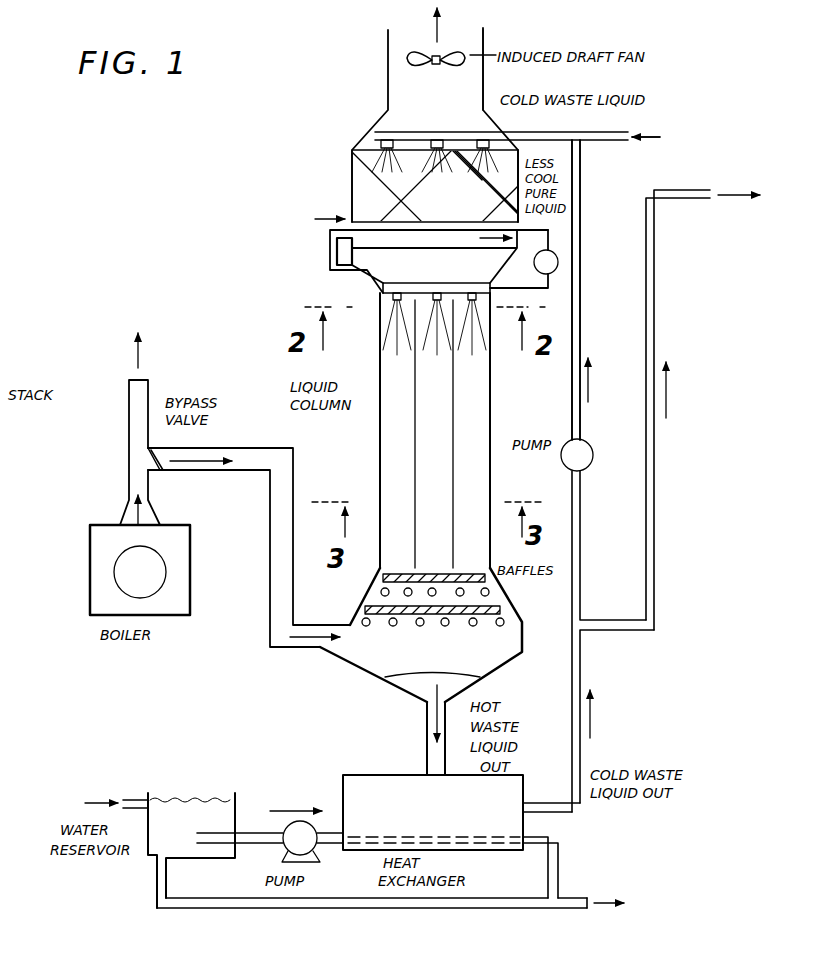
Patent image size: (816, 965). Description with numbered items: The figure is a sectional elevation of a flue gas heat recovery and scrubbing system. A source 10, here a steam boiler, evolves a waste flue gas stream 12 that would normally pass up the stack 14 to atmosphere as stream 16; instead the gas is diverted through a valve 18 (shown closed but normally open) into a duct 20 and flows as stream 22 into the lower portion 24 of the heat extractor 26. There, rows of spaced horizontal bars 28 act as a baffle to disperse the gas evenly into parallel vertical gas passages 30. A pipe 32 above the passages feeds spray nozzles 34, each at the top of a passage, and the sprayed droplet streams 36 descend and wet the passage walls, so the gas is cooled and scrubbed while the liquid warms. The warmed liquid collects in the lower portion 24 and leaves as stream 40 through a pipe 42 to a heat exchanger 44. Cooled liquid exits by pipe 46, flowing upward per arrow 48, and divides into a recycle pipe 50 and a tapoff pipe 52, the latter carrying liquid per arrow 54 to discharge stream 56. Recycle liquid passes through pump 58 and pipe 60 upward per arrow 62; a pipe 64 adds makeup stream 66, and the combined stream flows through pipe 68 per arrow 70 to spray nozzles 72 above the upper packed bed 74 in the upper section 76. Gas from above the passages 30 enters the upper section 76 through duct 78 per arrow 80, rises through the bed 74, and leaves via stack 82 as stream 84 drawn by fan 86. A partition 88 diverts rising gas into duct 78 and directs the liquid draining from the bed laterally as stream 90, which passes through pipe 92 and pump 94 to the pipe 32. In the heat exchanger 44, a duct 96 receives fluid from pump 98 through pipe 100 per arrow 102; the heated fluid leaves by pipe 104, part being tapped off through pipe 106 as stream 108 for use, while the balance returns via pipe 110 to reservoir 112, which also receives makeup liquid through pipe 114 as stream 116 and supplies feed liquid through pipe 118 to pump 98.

The source of waste flue gas 10 is at (90, 527).
The waste flue gas stream 12 is at (131, 519).
The stack 14 is at (129, 400).
The atmospheric discharge stream 16 is at (136, 357).
The valve 18 is at (153, 450).
The duct 20 is at (276, 448).
The gas stream 22 is at (222, 458).
The lower portion of heat extractor 24 is at (505, 664).
The heat extractor 26 is at (305, 272).
The horizontal bars 28 is at (503, 620).
The gas passages 30 is at (384, 366).
The pipe 32 is at (544, 288).
The spray nozzles 34 is at (470, 283).
The sprayed liquid droplet streams 36 is at (395, 325).
The warmed liquid medium stream 40 is at (427, 720).
The pipe 42 is at (436, 741).
The heat exchanger 44 is at (364, 776).
The pipe 46 is at (583, 812).
The arrow 48 is at (592, 707).
The recycle pipe 50 is at (581, 583).
The tapoff pipe 52 is at (656, 585).
The arrow 54 is at (668, 390).
The discharge stream 56 is at (733, 194).
The pump 58 is at (590, 450).
The pipe 60 is at (582, 320).
The arrow 62 is at (590, 385).
The pipe 64 is at (582, 150).
The makeup liquid medium stream 66 is at (645, 140).
The pipe 68 is at (553, 148).
The arrow 70 is at (522, 122).
The spray nozzles 72 is at (483, 140).
The upper packed bed 74 is at (360, 177).
The upper section 76 is at (372, 108).
The duct 78 is at (330, 248).
The arrow 80 is at (316, 217).
The stack 82 is at (483, 78).
The discharge gas stream 84 is at (440, 34).
The fan 86 is at (428, 56).
The partition 88 is at (376, 252).
The liquid stream 90 is at (516, 230).
The pipe 92 is at (555, 240).
The pump 94 is at (558, 264).
The duct 96 is at (486, 850).
The pump 98 is at (287, 830).
The pipe 100 is at (327, 848).
The arrow 102 is at (298, 808).
The pipe 104 is at (560, 867).
The tapoff pipe 106 is at (580, 910).
The heated fluid stream 108 is at (622, 902).
The pipe 110 is at (470, 910).
The reservoir 112 is at (148, 858).
The pipe 114 is at (130, 800).
The makeup fluid stream 116 is at (106, 802).
The pipe 118 is at (266, 846).